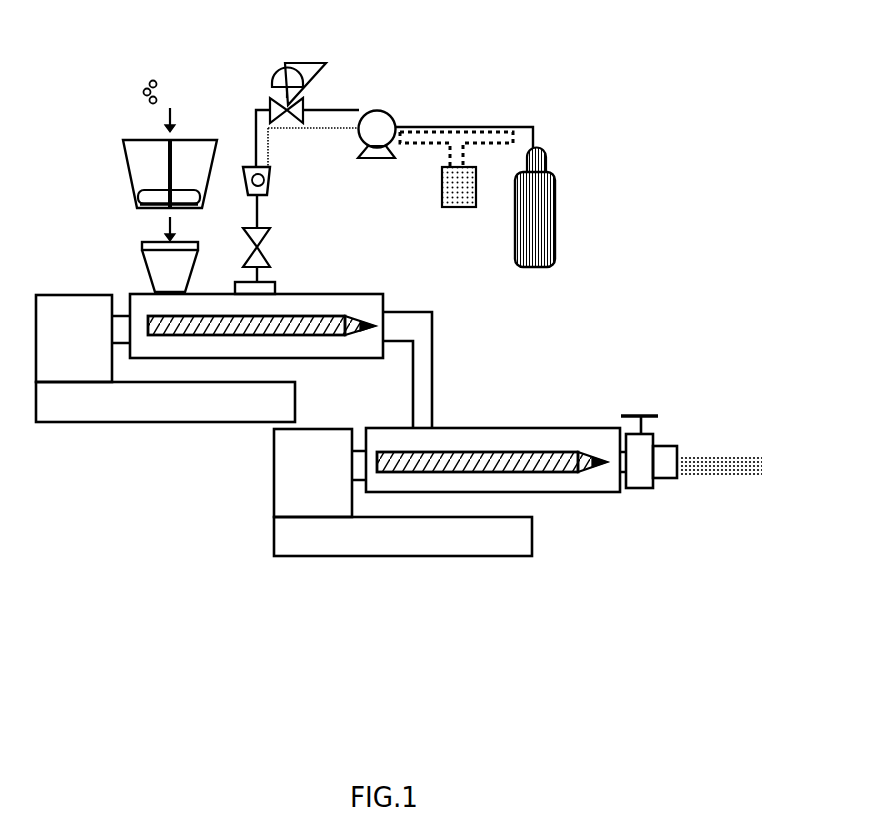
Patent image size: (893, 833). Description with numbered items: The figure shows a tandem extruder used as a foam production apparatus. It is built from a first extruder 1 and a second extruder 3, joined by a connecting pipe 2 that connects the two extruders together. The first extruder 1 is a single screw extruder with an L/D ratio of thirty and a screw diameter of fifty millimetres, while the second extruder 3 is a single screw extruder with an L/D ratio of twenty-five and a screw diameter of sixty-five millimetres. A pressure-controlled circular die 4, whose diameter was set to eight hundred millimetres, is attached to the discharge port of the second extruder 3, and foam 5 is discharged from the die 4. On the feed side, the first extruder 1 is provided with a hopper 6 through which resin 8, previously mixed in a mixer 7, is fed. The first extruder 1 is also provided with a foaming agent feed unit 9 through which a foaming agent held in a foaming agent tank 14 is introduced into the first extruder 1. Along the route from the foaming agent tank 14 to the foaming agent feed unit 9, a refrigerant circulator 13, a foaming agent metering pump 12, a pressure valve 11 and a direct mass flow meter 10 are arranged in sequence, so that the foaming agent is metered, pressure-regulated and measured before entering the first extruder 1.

The first extruder 1 is at (202, 350).
The connecting pipe 2 is at (427, 377).
The second extruder 3 is at (493, 479).
The pressure-controlled circular die 4 is at (638, 457).
The foam 5 is at (743, 457).
The hopper 6 is at (165, 273).
The mixer 7 is at (138, 168).
The resin 8 is at (145, 85).
The foaming agent feed unit 9 is at (257, 285).
The direct mass flow meter 10 is at (270, 182).
The pressure valve 11 is at (293, 77).
The foaming agent metering pump 12 is at (385, 128).
The refrigerant circulator 13 is at (453, 177).
The foaming agent tank 14 is at (545, 232).